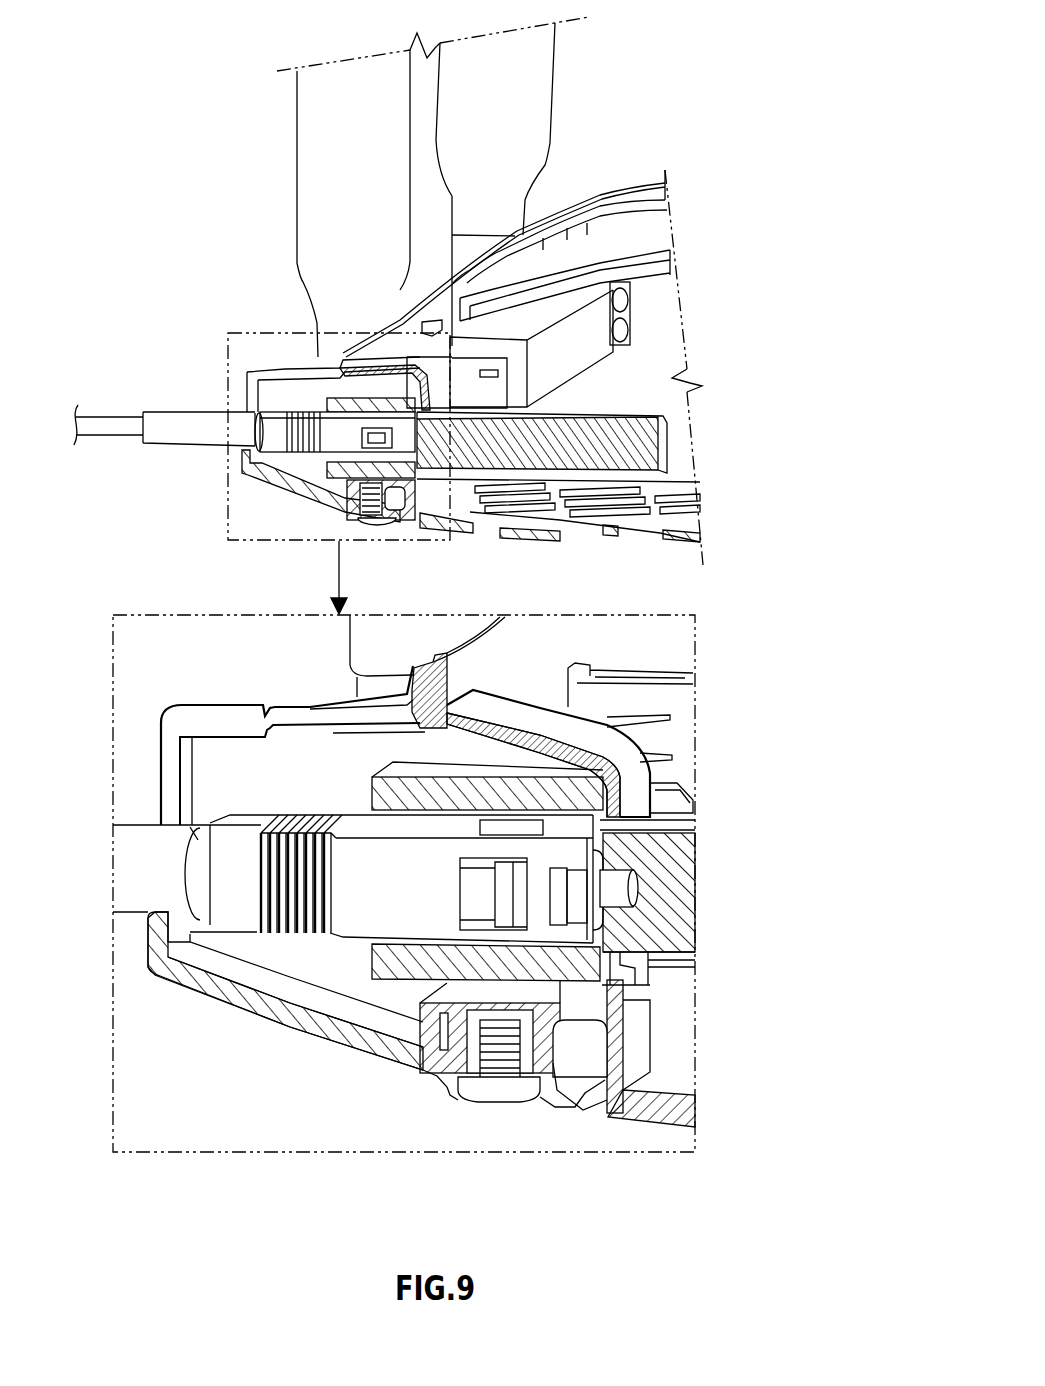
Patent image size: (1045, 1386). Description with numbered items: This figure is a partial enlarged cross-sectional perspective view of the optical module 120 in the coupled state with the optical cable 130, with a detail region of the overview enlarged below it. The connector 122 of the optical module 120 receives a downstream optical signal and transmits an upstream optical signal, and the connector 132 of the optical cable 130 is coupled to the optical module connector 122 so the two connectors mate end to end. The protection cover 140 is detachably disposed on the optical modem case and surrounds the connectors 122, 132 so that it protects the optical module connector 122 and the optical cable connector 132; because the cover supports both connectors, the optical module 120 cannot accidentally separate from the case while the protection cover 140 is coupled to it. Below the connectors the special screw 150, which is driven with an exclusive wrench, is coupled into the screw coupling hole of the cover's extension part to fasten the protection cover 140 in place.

The optical module 120 is at (637, 445).
The optical module connector 122 is at (342, 467).
The optical cable 130 is at (113, 417).
The optical cable connector 132 is at (322, 430).
The protection cover 140 is at (253, 700).
The screw 150 is at (493, 1102).